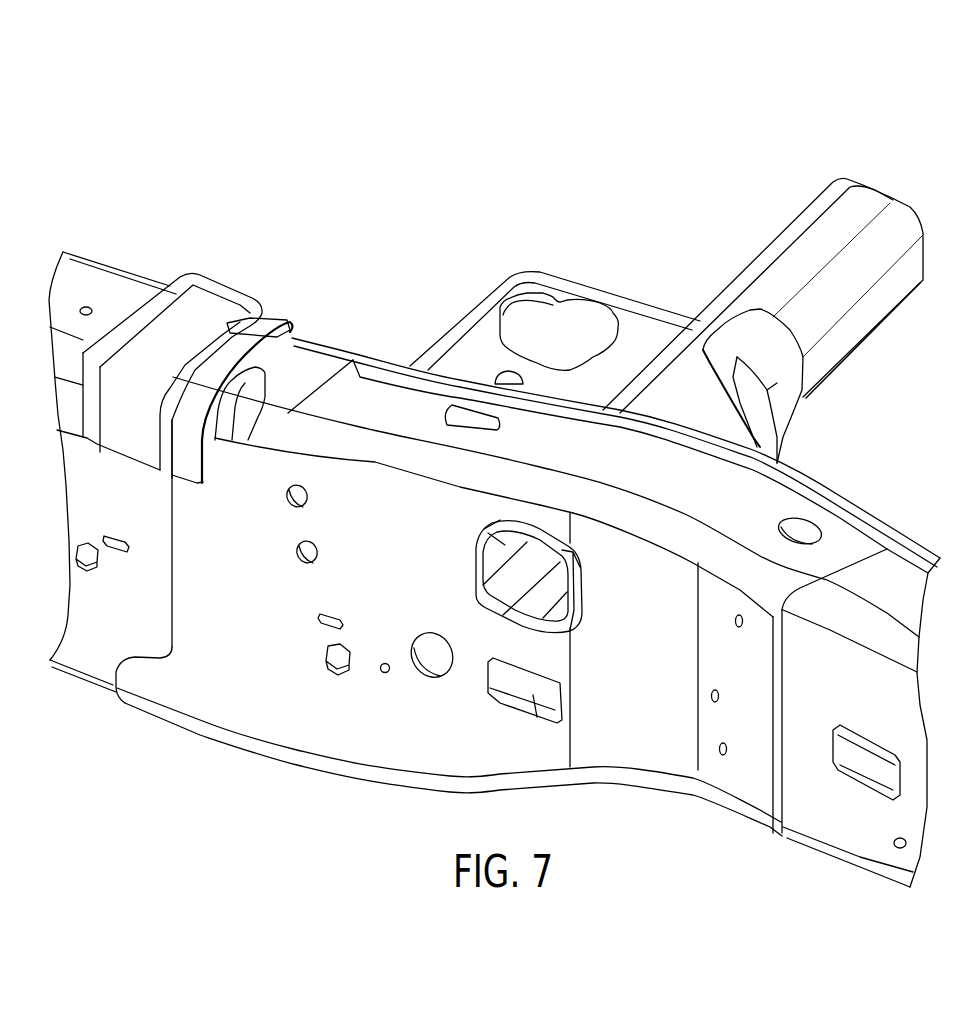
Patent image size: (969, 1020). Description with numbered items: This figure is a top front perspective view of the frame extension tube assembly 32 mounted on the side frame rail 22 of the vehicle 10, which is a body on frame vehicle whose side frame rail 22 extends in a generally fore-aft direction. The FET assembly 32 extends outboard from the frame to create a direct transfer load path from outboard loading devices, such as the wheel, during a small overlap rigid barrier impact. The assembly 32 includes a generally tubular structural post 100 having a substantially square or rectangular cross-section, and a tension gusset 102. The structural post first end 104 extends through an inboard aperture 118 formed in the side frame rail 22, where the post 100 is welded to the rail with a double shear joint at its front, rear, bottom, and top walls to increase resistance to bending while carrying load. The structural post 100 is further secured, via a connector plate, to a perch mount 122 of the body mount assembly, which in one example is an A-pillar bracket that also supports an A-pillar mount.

The vehicle 10 is at (802, 110).
The side frame rail 22 is at (223, 707).
The frame extension tube assembly 32 is at (850, 400).
The structural post 100 is at (865, 203).
The tension gusset 102 is at (790, 400).
The first end 104 is at (577, 652).
The inboard aperture 118 is at (580, 588).
The perch mount 122 is at (514, 262).